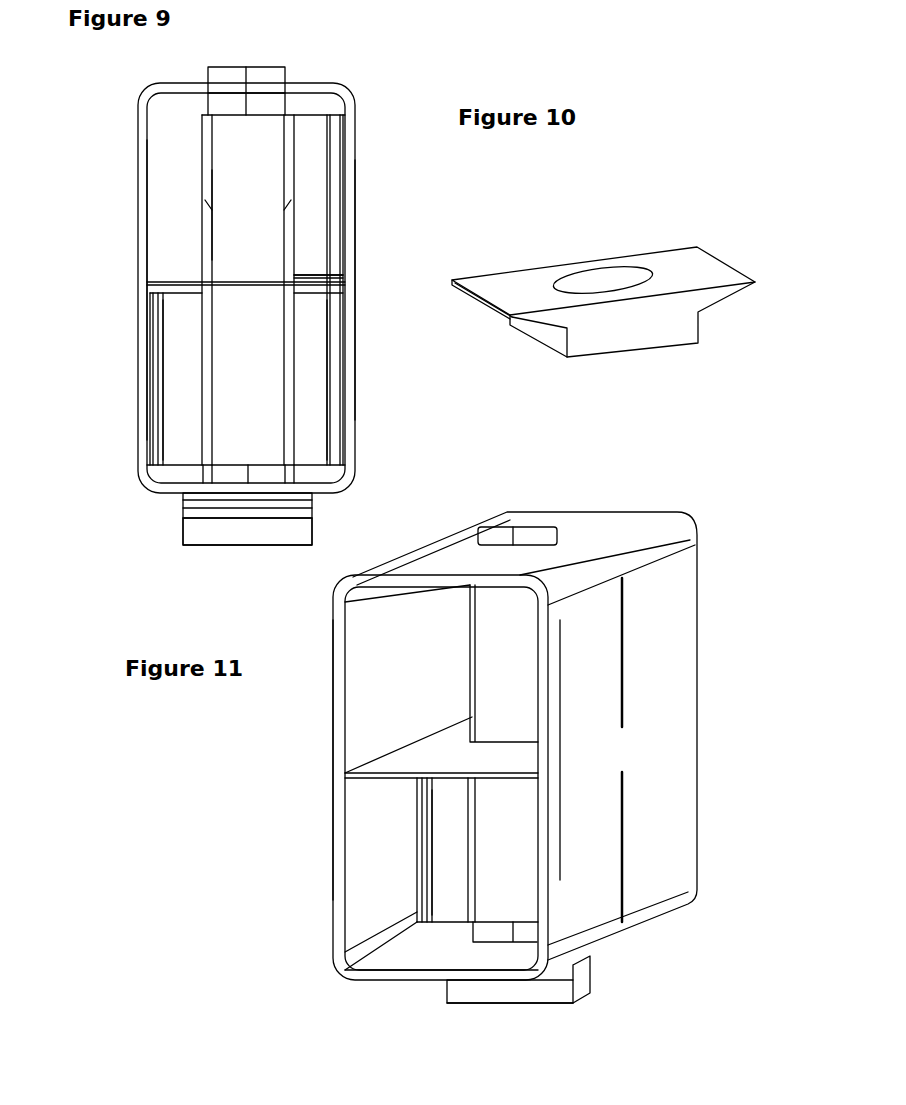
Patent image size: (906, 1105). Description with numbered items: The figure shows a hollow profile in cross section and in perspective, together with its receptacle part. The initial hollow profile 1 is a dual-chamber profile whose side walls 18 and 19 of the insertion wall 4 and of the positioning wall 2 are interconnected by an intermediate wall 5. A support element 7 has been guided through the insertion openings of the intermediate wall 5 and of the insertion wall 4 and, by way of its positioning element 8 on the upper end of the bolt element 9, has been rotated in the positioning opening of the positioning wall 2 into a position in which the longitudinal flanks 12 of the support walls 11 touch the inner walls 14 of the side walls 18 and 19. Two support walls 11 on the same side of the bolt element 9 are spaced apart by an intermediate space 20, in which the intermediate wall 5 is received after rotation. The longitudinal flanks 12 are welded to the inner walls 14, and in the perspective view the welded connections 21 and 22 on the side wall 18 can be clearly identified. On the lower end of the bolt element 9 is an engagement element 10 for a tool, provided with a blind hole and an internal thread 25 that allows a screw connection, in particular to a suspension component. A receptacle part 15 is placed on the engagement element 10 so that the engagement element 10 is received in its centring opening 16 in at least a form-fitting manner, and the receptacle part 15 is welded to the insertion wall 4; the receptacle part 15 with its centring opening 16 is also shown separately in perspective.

In FIG. 9, the initial hollow profile 1 is at (388, 125).
In FIG. 11, the initial hollow profile 1 is at (695, 487).
In FIG. 9, the positioning wall 2 is at (300, 93).
In FIG. 11, the positioning wall 2 is at (595, 527).
In FIG. 9, the insertion wall 4 is at (168, 493).
In FIG. 11, the insertion wall 4 is at (390, 975).
In FIG. 9, the intermediate wall 5 is at (252, 288).
In FIG. 11, the intermediate wall 5 is at (385, 775).
In FIG. 9, the support element 7 is at (165, 148).
In FIG. 9, the positioning element 8 is at (230, 75).
In FIG. 11, the positioning element 8 is at (532, 530).
In FIG. 9, the bolt element 9 is at (228, 215).
In FIG. 11, the bolt element 9 is at (500, 658).
In FIG. 9, the engagement element 10 is at (270, 477).
In FIG. 11, the engagement element 10 is at (503, 932).
In FIG. 9, the support walls 11 is at (312, 217).
In FIG. 11, the support walls 11 is at (470, 922).
In FIG. 9, the longitudinal flanks 12 is at (338, 405).
In FIG. 11, the longitudinal flanks 12 is at (448, 883).
In FIG. 9, the inner walls 14 is at (340, 180).
In FIG. 11, the inner walls 14 is at (363, 840).
In FIG. 9, the receptacle part 15 is at (220, 535).
In FIG. 10, the receptacle part 15 is at (627, 338).
In FIG. 11, the receptacle part 15 is at (583, 988).
In FIG. 10, the centring opening 16 is at (603, 280).
In FIG. 9, the side wall 18 is at (350, 223).
In FIG. 11, the side wall 18 is at (657, 665).
In FIG. 9, the side wall 19 is at (140, 247).
In FIG. 11, the side wall 19 is at (332, 688).
In FIG. 9, the intermediate space 20 is at (322, 292).
In FIG. 11, the welded connection 21 is at (622, 700).
In FIG. 11, the welded connection 22 is at (627, 857).
In FIG. 9, the internal thread 25 is at (222, 250).